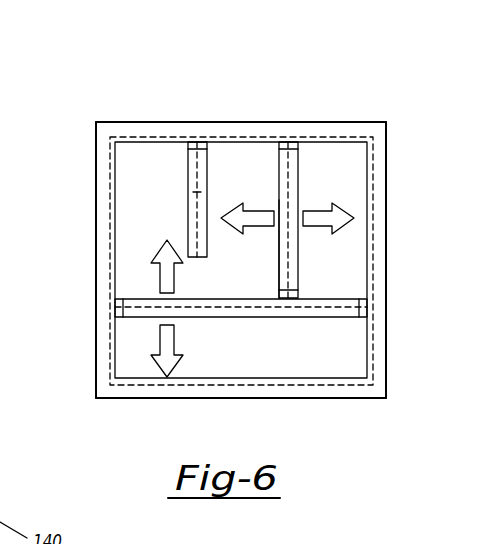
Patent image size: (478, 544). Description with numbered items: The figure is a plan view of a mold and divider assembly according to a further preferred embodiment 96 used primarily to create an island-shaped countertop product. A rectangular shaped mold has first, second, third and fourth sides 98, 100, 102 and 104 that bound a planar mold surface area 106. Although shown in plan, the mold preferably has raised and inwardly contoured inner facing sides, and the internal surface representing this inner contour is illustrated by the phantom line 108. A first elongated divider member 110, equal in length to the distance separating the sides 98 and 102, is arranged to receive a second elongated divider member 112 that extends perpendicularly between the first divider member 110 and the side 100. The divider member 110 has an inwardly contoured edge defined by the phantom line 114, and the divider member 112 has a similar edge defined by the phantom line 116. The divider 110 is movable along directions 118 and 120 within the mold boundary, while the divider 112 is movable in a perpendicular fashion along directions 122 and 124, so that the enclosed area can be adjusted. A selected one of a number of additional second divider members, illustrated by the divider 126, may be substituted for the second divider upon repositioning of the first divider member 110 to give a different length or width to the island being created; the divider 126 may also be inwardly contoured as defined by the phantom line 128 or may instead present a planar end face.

The further preferred embodiment 96 is at (155, 88).
The first side 98 is at (96, 222).
The second side 100 is at (220, 122).
The third side 102 is at (386, 215).
The fourth side 104 is at (227, 398).
The planar mold surface area 106 is at (327, 350).
The phantom line 108 is at (109, 182).
The first elongated divider member 110 is at (243, 317).
The second elongated divider member 112 is at (297, 163).
The phantom line 114 is at (203, 307).
The phantom line 116 is at (280, 256).
The direction 118 is at (148, 358).
The direction 120 is at (167, 278).
The direction 122 is at (320, 221).
The direction 124 is at (260, 211).
The additional second divider member 126 is at (188, 157).
The phantom line 128 is at (190, 192).